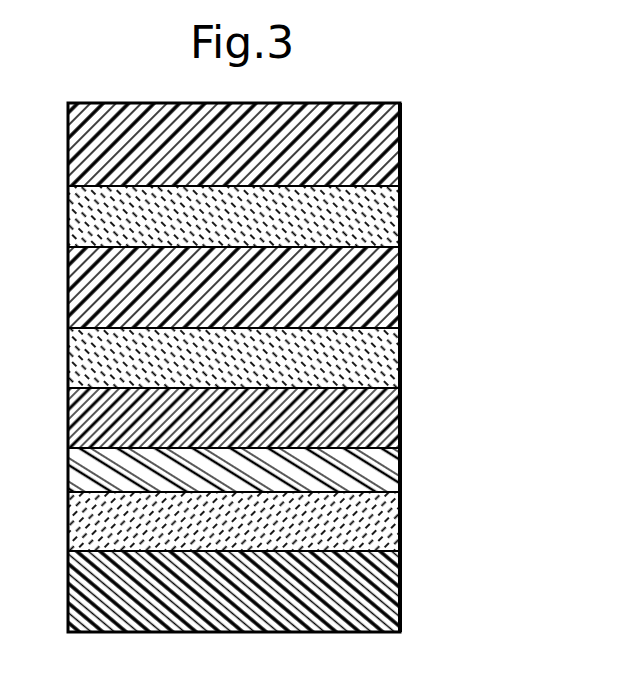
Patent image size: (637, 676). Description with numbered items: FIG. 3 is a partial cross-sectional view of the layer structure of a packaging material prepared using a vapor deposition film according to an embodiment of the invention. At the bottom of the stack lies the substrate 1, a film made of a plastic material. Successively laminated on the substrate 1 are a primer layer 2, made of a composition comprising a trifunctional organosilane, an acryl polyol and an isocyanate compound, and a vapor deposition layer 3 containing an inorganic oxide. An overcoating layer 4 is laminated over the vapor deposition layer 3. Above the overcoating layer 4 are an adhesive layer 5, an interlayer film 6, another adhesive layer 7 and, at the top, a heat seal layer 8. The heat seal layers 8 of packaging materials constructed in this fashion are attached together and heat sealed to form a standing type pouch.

The substrate 1 is at (380, 585).
The primer layer 2 is at (373, 518).
The vapor deposition layer 3 is at (380, 472).
The overcoating layer 4 is at (373, 417).
The adhesive layer 5 is at (370, 360).
The interlayer film 6 is at (367, 283).
The another adhesive layer 7 is at (367, 217).
The heat seal layer 8 is at (372, 140).